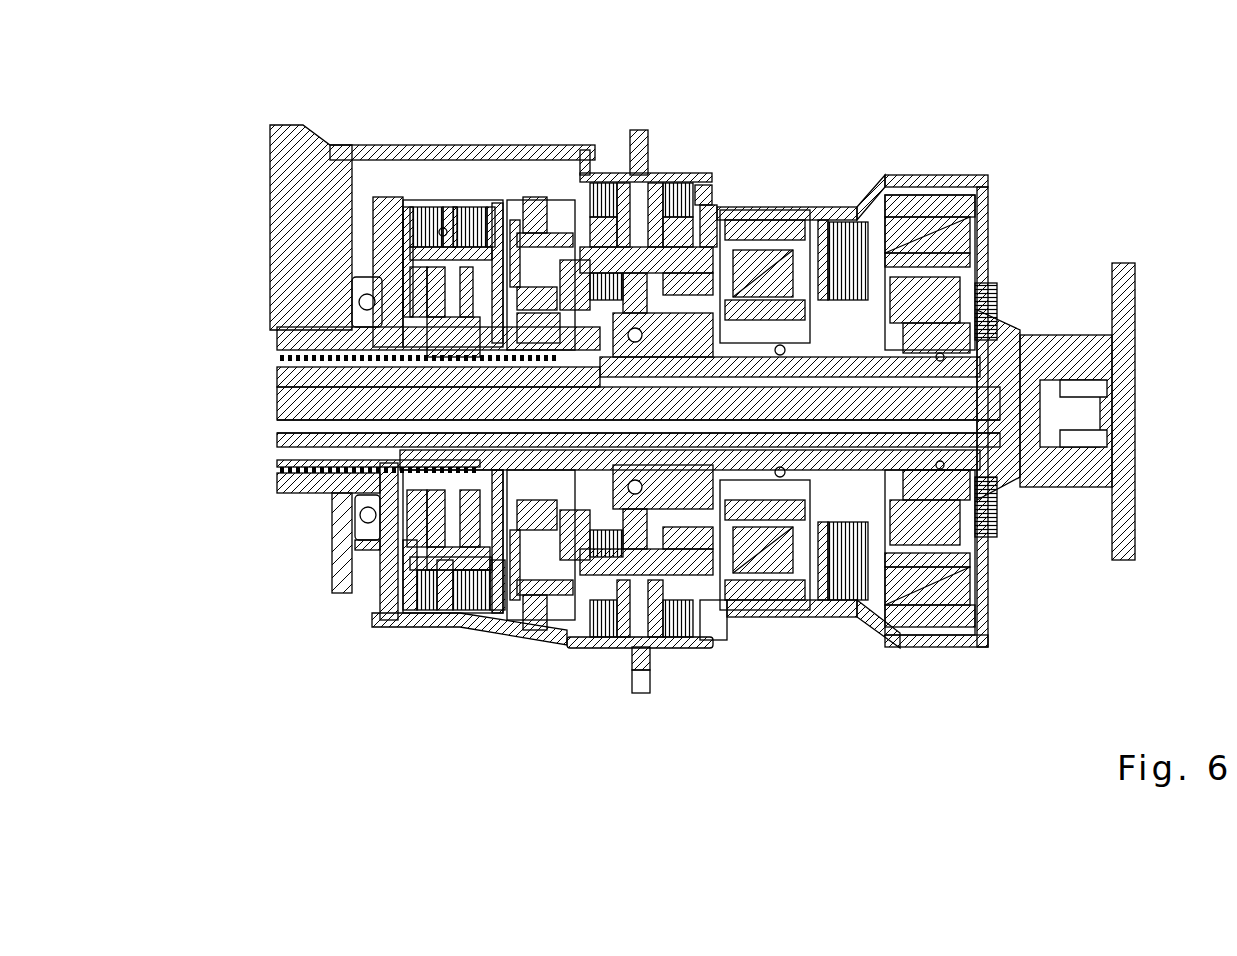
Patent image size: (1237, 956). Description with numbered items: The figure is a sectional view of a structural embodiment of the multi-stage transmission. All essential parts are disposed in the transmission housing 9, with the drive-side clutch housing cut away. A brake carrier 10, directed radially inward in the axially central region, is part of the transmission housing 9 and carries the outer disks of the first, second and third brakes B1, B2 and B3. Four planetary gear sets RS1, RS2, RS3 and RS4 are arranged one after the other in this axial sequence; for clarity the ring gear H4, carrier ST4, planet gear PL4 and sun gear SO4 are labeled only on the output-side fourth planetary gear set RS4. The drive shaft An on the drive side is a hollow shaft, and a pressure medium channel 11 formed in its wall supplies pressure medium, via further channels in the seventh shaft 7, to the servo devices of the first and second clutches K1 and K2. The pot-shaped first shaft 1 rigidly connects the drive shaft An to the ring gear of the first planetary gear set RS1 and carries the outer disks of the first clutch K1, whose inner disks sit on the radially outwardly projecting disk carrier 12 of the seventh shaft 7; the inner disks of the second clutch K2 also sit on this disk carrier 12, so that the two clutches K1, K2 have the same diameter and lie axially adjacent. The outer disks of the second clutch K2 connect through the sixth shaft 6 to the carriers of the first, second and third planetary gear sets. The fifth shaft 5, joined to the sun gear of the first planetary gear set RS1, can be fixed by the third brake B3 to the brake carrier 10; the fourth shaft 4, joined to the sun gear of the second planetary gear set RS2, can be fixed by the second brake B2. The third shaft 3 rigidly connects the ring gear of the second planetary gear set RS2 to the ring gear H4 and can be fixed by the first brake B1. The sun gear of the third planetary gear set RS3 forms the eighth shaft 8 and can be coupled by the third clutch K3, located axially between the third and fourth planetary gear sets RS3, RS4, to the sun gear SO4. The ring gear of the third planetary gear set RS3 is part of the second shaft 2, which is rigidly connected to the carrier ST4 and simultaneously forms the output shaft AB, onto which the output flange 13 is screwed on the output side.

The first shaft 1 is at (393, 195).
The second shaft 2 is at (880, 190).
The third shaft 3 is at (850, 205).
The fourth shaft 4 is at (672, 355).
The fifth shaft 5 is at (560, 260).
The sixth shaft 6 is at (497, 203).
The seventh shaft 7 is at (923, 423).
The eighth shaft 8 is at (800, 230).
The transmission housing 9 is at (315, 207).
The brake carrier 10 is at (638, 247).
The pressure medium channel 11 is at (277, 355).
The disk carrier 12 is at (440, 232).
The output flange 13 is at (1123, 520).
The drive shaft An is at (277, 455).
The output shaft AB is at (1035, 458).
The first clutch K1 is at (430, 592).
The second clutch K2 is at (473, 592).
The third clutch K3 is at (860, 620).
The first brake B1 is at (715, 620).
The second brake B2 is at (568, 595).
The third brake B3 is at (608, 610).
The first planetary gear set RS1 is at (497, 648).
The second planetary gear set RS2 is at (700, 655).
The third planetary gear set RS3 is at (850, 638).
The fourth planetary gear set RS4 is at (960, 648).
The ring gear H4 is at (937, 180).
The carrier ST4 is at (970, 212).
The planet gear PL4 is at (983, 263).
The sun gear SO4 is at (990, 345).